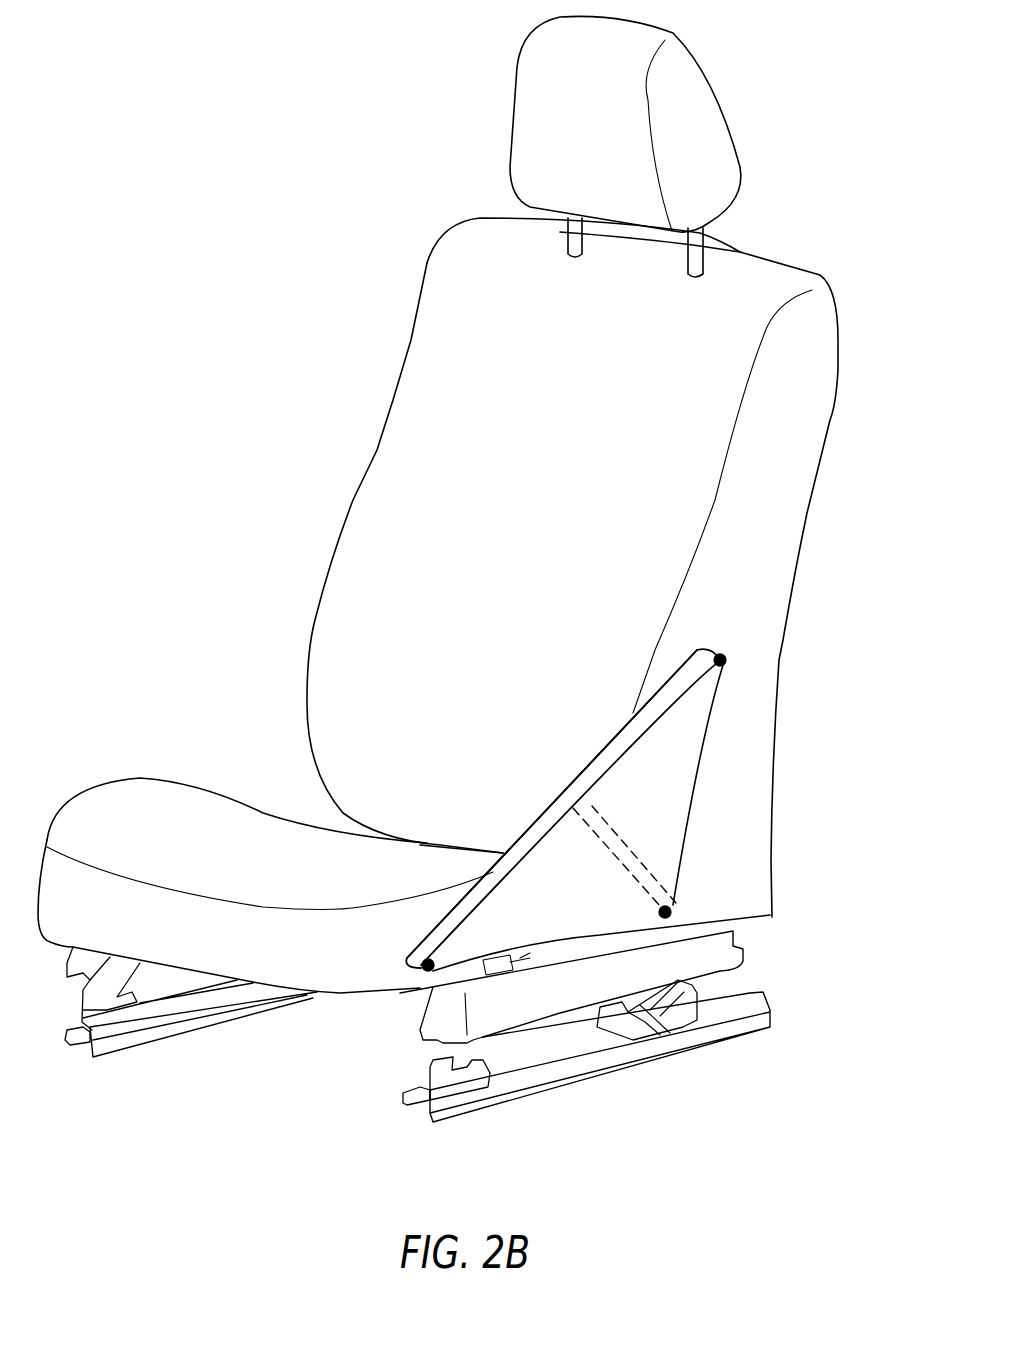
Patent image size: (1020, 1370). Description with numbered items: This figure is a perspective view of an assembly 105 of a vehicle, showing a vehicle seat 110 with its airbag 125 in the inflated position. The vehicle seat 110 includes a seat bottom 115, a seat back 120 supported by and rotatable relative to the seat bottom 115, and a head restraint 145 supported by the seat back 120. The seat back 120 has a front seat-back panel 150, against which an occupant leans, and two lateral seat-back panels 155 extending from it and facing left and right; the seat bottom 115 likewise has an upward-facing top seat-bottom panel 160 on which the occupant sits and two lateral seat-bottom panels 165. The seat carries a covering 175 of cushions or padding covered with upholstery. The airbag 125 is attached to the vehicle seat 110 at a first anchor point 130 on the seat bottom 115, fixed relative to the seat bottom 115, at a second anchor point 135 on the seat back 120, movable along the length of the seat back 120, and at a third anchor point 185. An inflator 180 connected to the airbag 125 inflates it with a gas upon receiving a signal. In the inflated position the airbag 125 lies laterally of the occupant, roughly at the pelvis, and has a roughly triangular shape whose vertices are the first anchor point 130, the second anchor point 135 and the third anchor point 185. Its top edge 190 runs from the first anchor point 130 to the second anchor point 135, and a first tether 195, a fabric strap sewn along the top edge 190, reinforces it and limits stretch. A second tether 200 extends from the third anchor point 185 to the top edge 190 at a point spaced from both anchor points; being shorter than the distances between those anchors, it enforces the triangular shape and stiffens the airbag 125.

The assembly 105 is at (848, 562).
The vehicle seat 110 is at (313, 103).
The seat bottom 115 is at (347, 995).
The seat back 120 is at (830, 420).
The airbag 125 is at (693, 777).
The first anchor point 130 is at (418, 968).
The second anchor point 135 is at (727, 660).
The head restraint 145 is at (707, 73).
The front seat-back panel 150 is at (440, 363).
The lateral seat-back panels 155 is at (813, 330).
The top seat-bottom panel 160 is at (220, 827).
The lateral seat-bottom panels 165 is at (420, 910).
The covering 175 is at (360, 485).
The inflator 180 is at (500, 978).
The third anchor point 185 is at (670, 916).
The top edge 190 is at (613, 733).
The first tether 195 is at (677, 683).
The second tether 200 is at (593, 843).